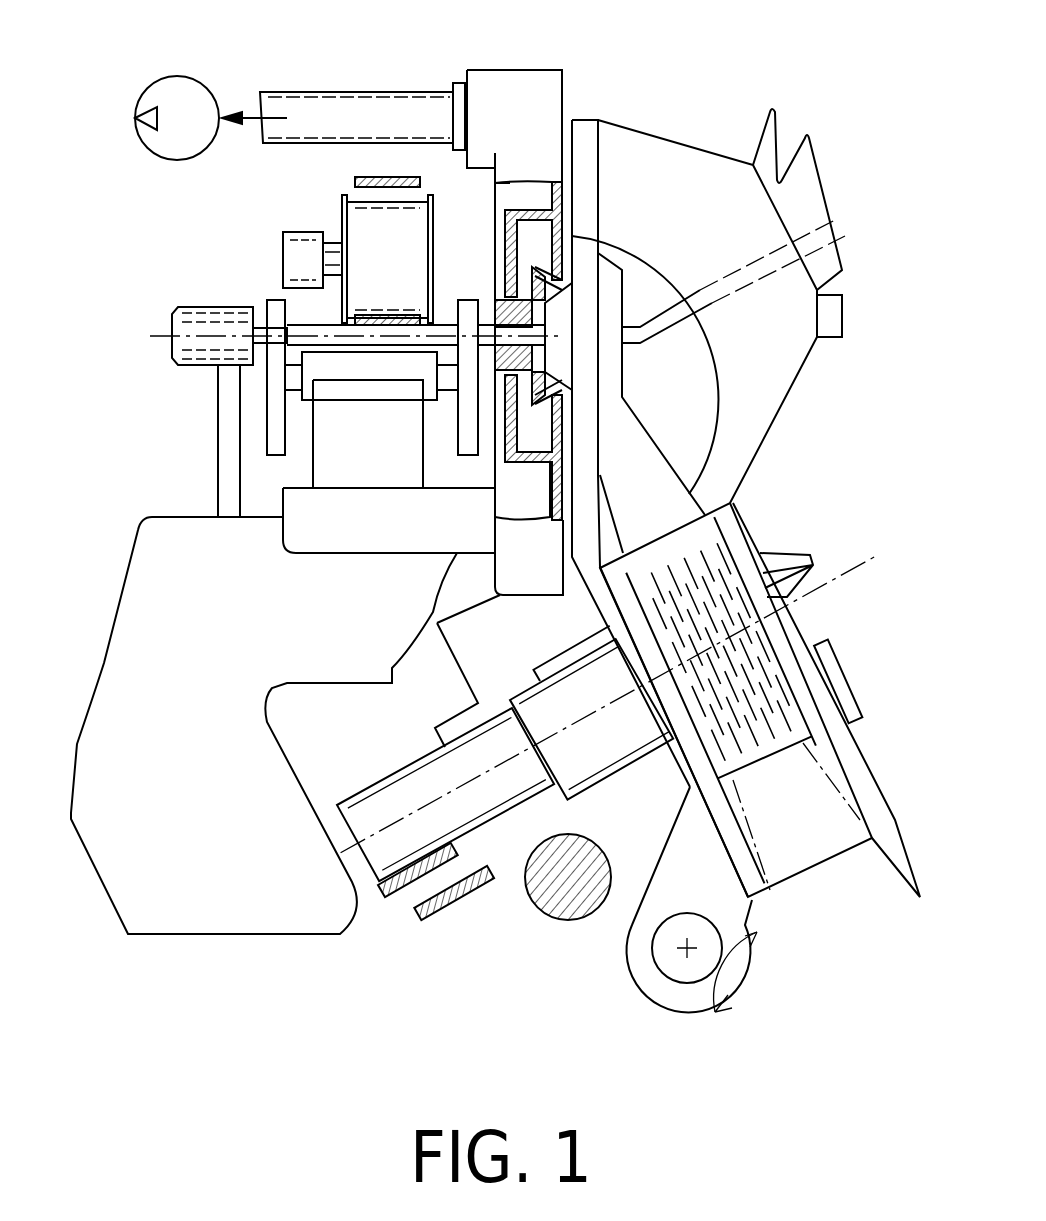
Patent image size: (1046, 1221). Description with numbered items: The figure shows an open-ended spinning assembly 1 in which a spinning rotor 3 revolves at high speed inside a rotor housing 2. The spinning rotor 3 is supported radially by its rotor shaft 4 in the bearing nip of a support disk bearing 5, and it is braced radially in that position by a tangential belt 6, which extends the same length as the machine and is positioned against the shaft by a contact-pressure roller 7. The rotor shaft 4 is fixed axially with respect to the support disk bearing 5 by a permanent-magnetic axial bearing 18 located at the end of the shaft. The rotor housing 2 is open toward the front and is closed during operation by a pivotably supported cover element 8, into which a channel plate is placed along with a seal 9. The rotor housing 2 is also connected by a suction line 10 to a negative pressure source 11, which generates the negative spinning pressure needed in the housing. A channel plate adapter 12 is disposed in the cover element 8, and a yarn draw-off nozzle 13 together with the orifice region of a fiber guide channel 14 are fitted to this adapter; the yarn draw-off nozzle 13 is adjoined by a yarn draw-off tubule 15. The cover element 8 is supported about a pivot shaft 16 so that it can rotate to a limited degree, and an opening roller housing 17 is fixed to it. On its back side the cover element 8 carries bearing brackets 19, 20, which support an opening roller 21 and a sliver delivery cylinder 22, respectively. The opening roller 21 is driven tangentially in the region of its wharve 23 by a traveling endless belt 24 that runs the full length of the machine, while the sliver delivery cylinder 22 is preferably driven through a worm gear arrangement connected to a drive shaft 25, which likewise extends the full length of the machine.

The open-ended spinning assembly 1 is at (684, 90).
The rotor housing 2 is at (518, 250).
The spinning rotor 3 is at (557, 320).
The rotor shaft 4 is at (443, 340).
The support disk bearing 5 is at (268, 478).
The tangential belt 6 is at (373, 318).
The contact-pressure roller 7 is at (398, 243).
The cover element 8 is at (583, 148).
The seal 9 is at (571, 423).
The suction line 10 is at (370, 107).
The negative pressure source 11 is at (178, 105).
The channel plate adapter 12 is at (557, 307).
The yarn draw-off nozzle 13 is at (543, 341).
The fiber guide channel 14 is at (650, 452).
The yarn draw-off tubule 15 is at (700, 308).
The pivot shaft 16 is at (687, 948).
The opening roller housing 17 is at (845, 767).
The permanent-magnetic axial bearing 18 is at (218, 327).
The bearing bracket 19 is at (643, 693).
The bearing bracket 20 is at (558, 667).
The opening roller 21 is at (700, 580).
The sliver delivery cylinder 22 is at (777, 555).
The wharve 23 is at (387, 800).
The traveling endless belt 24 is at (388, 888).
The drive shaft 25 is at (547, 887).